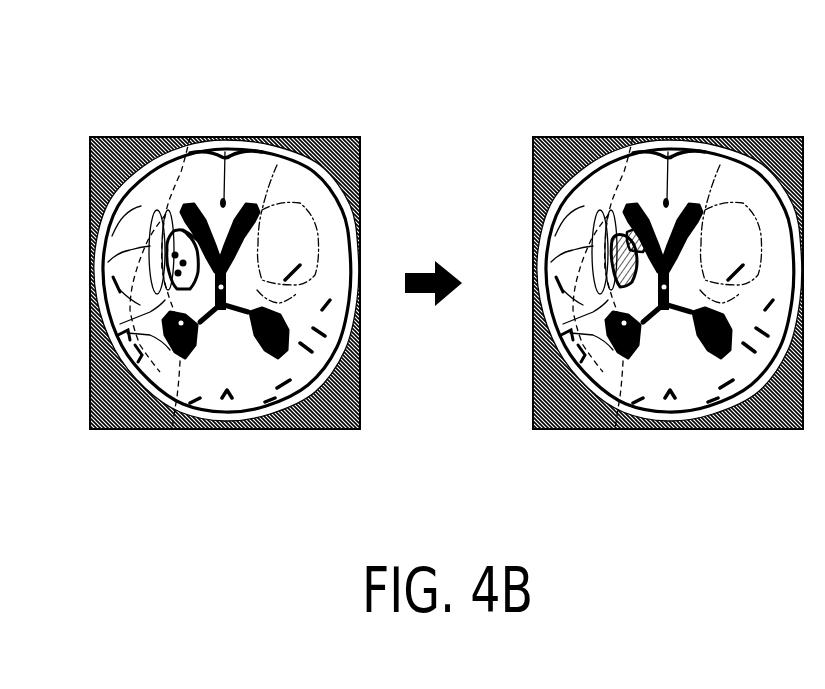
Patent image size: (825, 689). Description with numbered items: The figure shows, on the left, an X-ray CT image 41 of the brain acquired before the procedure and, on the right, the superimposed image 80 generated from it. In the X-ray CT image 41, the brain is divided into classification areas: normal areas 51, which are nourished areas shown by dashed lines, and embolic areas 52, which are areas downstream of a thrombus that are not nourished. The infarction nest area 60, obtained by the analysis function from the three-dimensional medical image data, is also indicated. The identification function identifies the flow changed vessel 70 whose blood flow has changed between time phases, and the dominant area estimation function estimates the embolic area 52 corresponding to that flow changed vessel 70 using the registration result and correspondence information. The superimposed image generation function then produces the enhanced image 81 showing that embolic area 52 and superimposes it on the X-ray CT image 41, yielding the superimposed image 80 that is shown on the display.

The X-ray CT image 41 is at (244, 84).
The superimposed image 80 is at (687, 84).
The normal area 51 is at (615, 430).
The infarction nest area 60 is at (573, 180).
The flow changed vessel 70 is at (178, 272).
The enhanced image 81 is at (614, 262).
The embolic area 52 is at (570, 333).